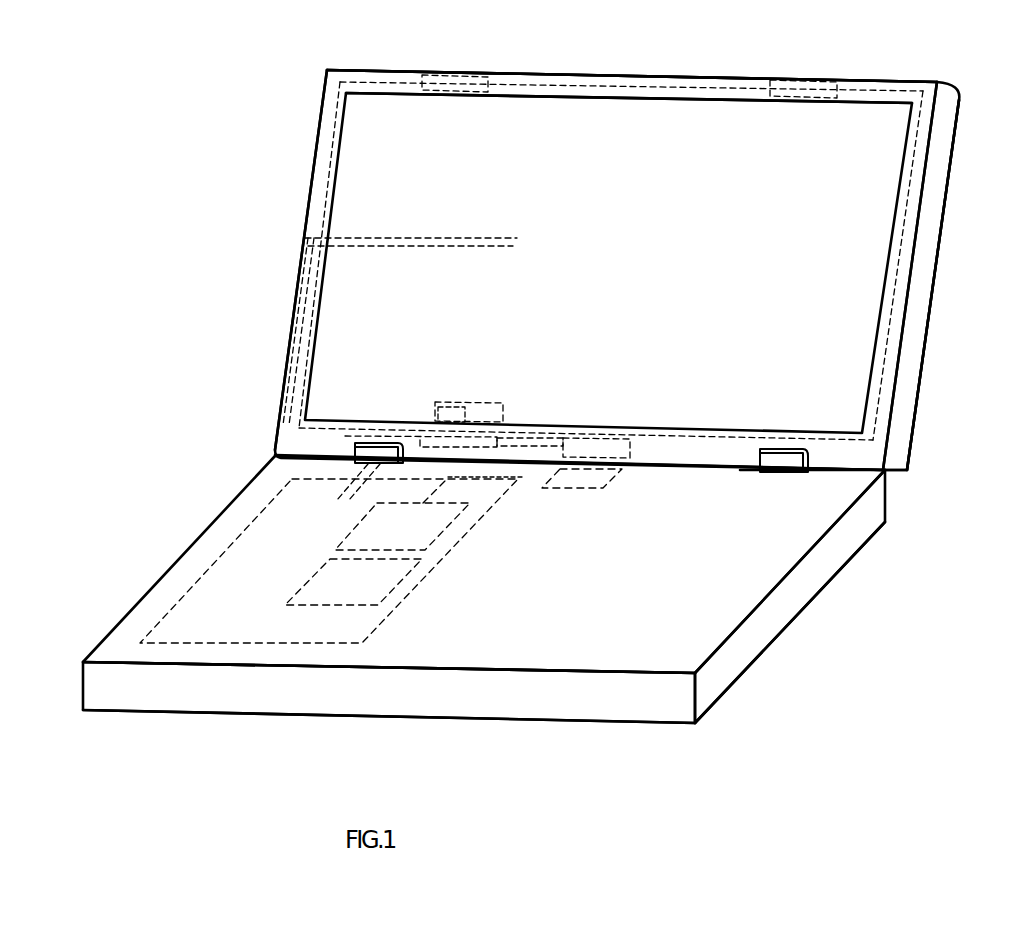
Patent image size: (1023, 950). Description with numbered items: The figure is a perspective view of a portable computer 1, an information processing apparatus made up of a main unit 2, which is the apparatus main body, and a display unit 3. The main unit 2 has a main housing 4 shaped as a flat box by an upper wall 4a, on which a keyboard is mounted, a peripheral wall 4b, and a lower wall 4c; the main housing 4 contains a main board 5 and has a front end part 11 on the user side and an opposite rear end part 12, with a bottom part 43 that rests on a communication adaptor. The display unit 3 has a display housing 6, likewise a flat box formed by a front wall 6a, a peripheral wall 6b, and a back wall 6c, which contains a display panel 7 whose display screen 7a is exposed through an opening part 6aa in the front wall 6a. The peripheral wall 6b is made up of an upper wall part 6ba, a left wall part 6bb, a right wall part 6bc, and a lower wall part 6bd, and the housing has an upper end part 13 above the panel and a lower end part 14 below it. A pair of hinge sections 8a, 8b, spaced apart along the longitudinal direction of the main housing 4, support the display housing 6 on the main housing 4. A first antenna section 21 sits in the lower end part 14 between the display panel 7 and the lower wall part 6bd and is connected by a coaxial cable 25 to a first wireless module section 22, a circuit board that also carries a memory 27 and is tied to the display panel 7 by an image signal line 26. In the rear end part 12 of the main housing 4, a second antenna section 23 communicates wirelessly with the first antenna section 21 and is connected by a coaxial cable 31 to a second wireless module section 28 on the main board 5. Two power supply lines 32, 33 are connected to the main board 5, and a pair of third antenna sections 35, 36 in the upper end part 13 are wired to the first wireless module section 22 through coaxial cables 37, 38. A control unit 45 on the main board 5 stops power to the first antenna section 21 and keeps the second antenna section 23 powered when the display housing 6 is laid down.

The portable computer 1 is at (168, 176).
The main unit 2 is at (210, 512).
The display unit 3 is at (298, 191).
The main housing 4 is at (808, 590).
The upper wall 4a is at (518, 657).
The peripheral wall 4b is at (610, 712).
The lower wall 4c is at (735, 685).
The main board 5 is at (262, 645).
The display housing 6 is at (938, 270).
The front wall 6a is at (645, 85).
The opening part 6aa is at (563, 106).
The peripheral wall 6b is at (940, 182).
The upper wall part 6ba is at (523, 72).
The left wall part 6bb is at (303, 252).
The right wall part 6bc is at (920, 320).
The lower wall part 6bd is at (677, 460).
The back wall 6c is at (918, 378).
The display panel 7 is at (740, 118).
The display screen 7a is at (600, 259).
The hinge section 8a is at (393, 455).
The hinge section 8b is at (780, 455).
The front end part 11 is at (437, 657).
The rear end part 12 is at (850, 488).
The upper end part 13 is at (695, 85).
The lower end part 14 is at (673, 445).
The first antenna section 21 is at (596, 435).
The first wireless module section 22 is at (483, 400).
The second antenna section 23 is at (570, 490).
The coaxial cable 25 is at (538, 436).
The image signal line 26 is at (305, 320).
The memory 27 is at (447, 400).
The second wireless module section 28 is at (446, 530).
The coaxial cable 31 is at (526, 480).
The power supply line 32 is at (285, 351).
The power supply line 33 is at (415, 432).
The third antenna section 35 is at (460, 73).
The third antenna section 36 is at (805, 80).
The coaxial cable 37 is at (338, 118).
The coaxial cable 38 is at (918, 135).
The bottom part 43 is at (782, 635).
The control unit 45 is at (400, 585).